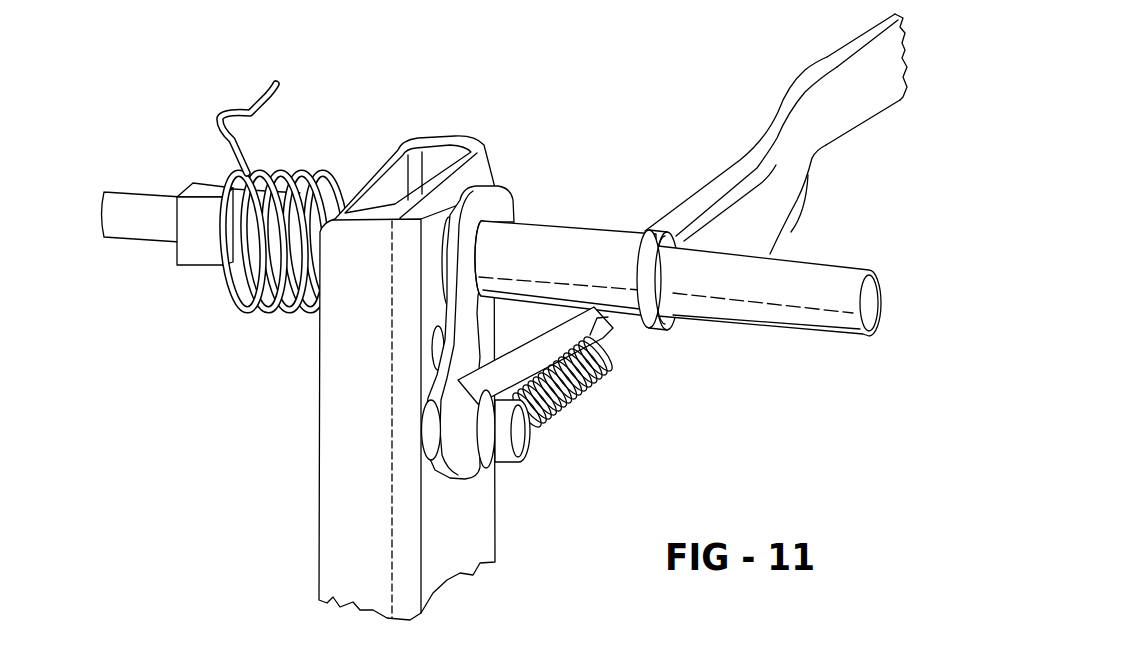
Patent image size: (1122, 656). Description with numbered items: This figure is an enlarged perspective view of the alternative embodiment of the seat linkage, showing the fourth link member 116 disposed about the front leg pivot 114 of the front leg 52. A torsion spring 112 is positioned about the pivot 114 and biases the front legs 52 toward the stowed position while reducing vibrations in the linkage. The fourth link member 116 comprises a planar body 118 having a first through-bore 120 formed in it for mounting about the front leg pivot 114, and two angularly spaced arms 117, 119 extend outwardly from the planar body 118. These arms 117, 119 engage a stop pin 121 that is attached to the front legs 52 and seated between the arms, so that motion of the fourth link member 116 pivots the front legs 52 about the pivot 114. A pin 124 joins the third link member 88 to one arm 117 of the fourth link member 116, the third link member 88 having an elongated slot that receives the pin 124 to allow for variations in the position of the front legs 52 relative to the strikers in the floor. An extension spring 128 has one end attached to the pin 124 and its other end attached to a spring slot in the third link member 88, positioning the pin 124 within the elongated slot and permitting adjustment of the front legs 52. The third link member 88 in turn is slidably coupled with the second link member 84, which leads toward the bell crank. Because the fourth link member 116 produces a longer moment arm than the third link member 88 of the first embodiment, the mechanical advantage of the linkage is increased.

The front leg 52 is at (318, 497).
The second link member 84 is at (836, 60).
The third link member 88 is at (733, 170).
The torsion spring 112 is at (308, 168).
The front leg pivot 114 is at (553, 222).
The fourth link member 116 is at (500, 188).
The arm 117 is at (420, 447).
The planar body 118 is at (493, 208).
The arm 119 is at (533, 310).
The first through-bore 120 is at (483, 222).
The stop pin 121 is at (431, 360).
The pin 124 is at (520, 450).
The extension spring 128 is at (583, 388).